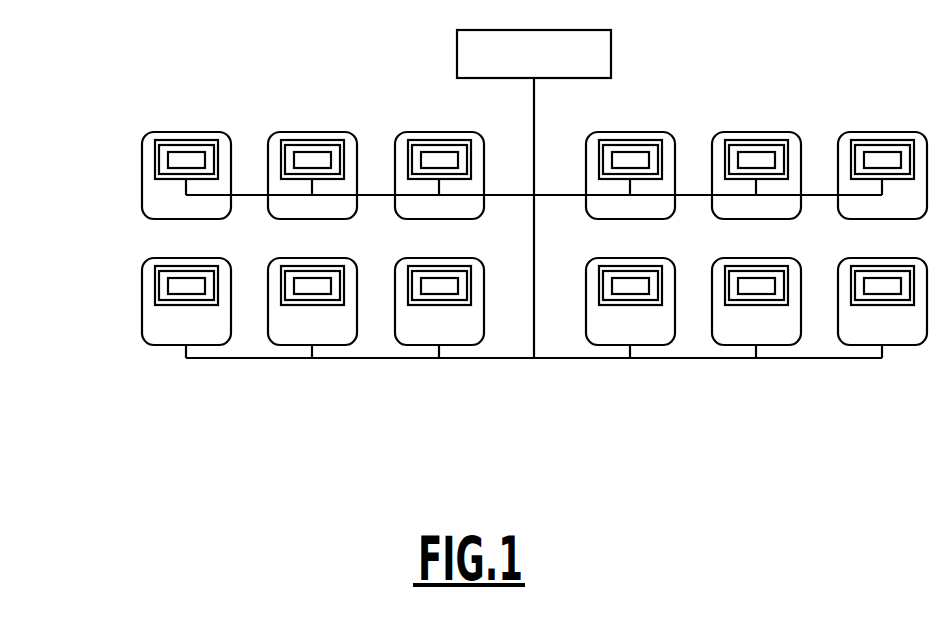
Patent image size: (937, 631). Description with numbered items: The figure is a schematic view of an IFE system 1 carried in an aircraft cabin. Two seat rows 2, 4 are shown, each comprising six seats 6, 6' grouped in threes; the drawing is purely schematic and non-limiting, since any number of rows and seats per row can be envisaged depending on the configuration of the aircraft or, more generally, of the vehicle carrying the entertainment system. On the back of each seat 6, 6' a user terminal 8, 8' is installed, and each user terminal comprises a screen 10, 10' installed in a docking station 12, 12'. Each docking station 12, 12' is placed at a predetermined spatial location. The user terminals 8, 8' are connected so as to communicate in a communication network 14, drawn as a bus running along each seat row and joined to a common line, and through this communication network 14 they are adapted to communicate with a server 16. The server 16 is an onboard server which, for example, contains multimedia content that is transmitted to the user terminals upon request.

The IFE system 1 is at (778, 85).
The seat row 2 is at (86, 163).
The seat row 4 is at (90, 285).
The seat 6 is at (195, 115).
The seat 6' is at (188, 308).
The user terminal 8 is at (195, 150).
The user terminal 8' is at (133, 337).
The screen 10 is at (144, 189).
The screen 10' is at (167, 341).
The docking station 12 is at (195, 137).
The docking station 12' is at (140, 313).
The communication network 14 is at (556, 161).
The server 16 is at (534, 54).